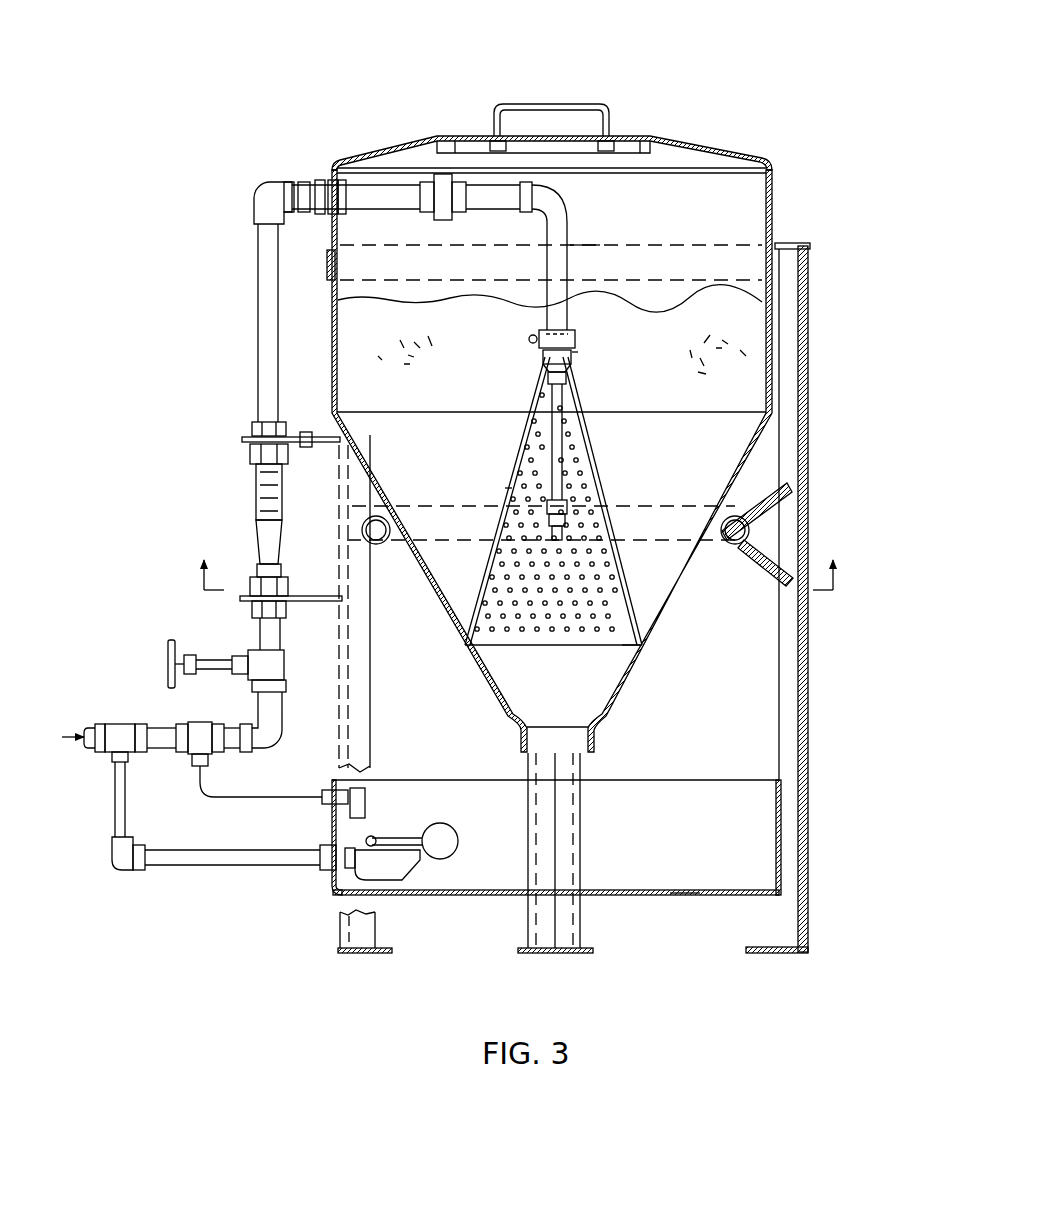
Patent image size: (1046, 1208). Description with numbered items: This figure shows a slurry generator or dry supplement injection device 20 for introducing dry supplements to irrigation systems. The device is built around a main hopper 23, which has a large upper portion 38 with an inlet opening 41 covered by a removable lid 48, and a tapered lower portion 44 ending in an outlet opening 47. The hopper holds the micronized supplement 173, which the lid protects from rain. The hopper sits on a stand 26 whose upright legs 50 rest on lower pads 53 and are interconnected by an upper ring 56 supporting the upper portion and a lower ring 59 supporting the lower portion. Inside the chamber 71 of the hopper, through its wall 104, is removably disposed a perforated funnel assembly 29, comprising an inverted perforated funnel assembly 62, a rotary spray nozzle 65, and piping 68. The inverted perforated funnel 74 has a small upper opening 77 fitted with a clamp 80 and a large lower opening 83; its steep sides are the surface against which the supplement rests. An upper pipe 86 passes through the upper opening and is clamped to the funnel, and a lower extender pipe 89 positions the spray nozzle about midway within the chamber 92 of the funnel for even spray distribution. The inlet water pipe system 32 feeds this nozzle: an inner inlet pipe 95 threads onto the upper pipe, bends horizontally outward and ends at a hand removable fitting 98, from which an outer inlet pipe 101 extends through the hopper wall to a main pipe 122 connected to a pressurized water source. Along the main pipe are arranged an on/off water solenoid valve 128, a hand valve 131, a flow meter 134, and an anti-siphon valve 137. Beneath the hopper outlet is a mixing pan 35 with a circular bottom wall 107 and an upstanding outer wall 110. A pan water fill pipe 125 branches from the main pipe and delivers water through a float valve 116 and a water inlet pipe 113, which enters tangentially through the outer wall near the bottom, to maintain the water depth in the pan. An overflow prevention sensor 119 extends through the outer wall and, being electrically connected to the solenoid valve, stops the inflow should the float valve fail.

The slurry generator 20 is at (710, 46).
The main hopper 23 is at (780, 190).
The stand 26 is at (814, 366).
The perforated funnel assembly 29 is at (598, 352).
The inlet water pipe system 32 is at (158, 630).
The mixing pan 35 is at (682, 900).
The large upper portion 38 is at (322, 170).
The inlet opening 41 is at (688, 142).
The tapered lower portion 44 is at (636, 660).
The outlet opening 47 is at (582, 766).
The removable lid 48 is at (494, 134).
The upright legs 50 is at (338, 930).
The lower pads 53 is at (366, 954).
The upper ring 56 is at (324, 266).
The lower ring 59 is at (384, 546).
The inverted perforated funnel assembly 62 is at (604, 458).
The rotary spray nozzle 65 is at (568, 506).
The piping 68 is at (580, 242).
The chamber 71 is at (376, 358).
The inverted perforated funnel 74 is at (512, 486).
The small upper opening 77 is at (570, 356).
The clamp 80 is at (530, 340).
The large lower opening 83 is at (574, 647).
The upper pipe 86 is at (568, 278).
The lower extender pipe 89 is at (549, 428).
The chamber 92 is at (548, 622).
The inner inlet pipe 95 is at (498, 208).
The hand removable fitting 98 is at (446, 218).
The outer inlet pipe 101 is at (384, 202).
The wall 104 is at (342, 322).
The circular bottom wall 107 is at (640, 890).
The upstanding outer wall 110 is at (772, 804).
The water inlet pipe 113 is at (410, 870).
The float valve 116 is at (380, 842).
The overflow prevention sensor 119 is at (366, 800).
The main pipe 122 is at (150, 702).
The pan water fill pipe 125 is at (274, 868).
The on/off water solenoid valve 128 is at (178, 768).
The hand valve 131 is at (238, 672).
The flow meter 134 is at (254, 496).
The anti-siphon valve 137 is at (250, 428).
The micronized supplement 173 is at (432, 390).